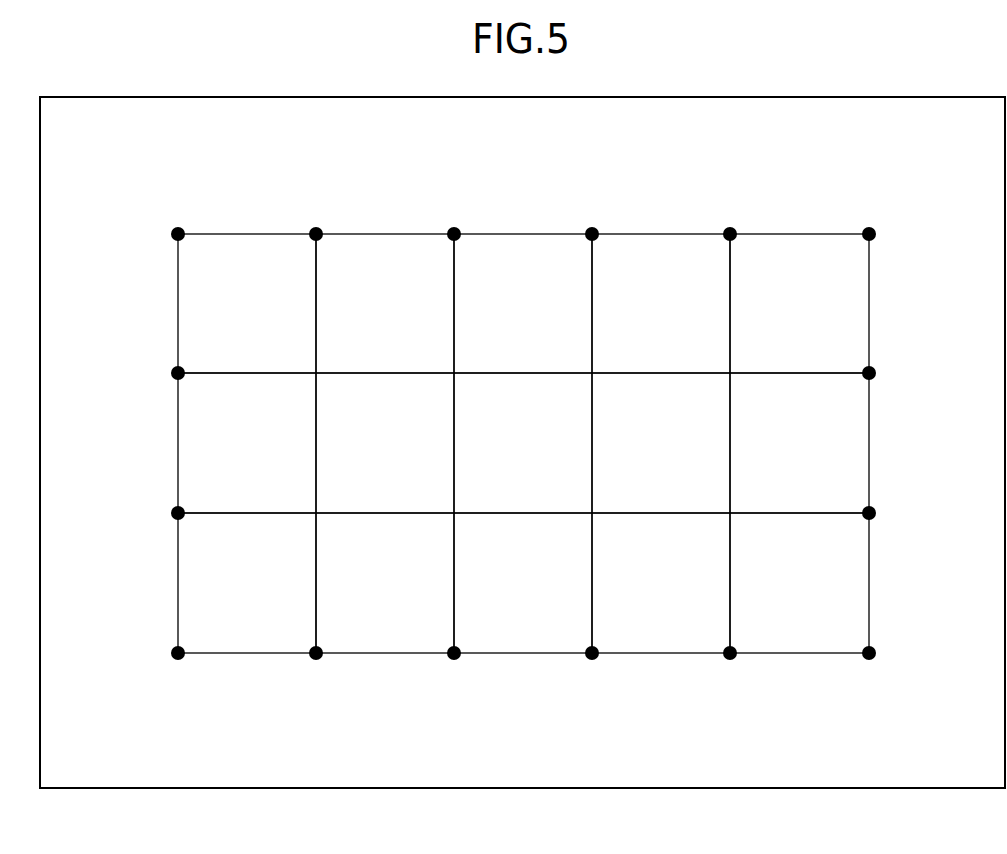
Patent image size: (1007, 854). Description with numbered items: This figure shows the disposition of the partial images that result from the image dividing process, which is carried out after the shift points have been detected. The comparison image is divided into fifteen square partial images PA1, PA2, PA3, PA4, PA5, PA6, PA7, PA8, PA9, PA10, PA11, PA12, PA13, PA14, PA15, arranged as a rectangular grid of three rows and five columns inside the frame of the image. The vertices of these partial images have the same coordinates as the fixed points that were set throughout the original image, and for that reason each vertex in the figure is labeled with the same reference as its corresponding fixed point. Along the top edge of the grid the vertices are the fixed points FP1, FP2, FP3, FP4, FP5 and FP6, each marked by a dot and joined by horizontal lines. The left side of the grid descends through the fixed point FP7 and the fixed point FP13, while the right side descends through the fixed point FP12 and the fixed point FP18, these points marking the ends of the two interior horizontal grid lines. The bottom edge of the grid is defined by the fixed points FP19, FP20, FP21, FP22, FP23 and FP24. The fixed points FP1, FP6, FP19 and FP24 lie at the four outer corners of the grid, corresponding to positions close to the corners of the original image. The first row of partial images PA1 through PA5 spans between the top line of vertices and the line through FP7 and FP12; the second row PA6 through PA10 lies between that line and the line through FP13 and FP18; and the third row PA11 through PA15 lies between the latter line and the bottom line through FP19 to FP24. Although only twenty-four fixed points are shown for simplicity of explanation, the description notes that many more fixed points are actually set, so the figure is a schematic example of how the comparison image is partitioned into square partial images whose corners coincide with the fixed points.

The fixed point FP1 is at (178, 226).
The fixed point FP2 is at (316, 226).
The fixed point FP3 is at (454, 226).
The fixed point FP4 is at (592, 226).
The fixed point FP5 is at (730, 226).
The fixed point FP6 is at (869, 226).
The fixed point FP7 is at (170, 373).
The fixed point FP12 is at (878, 373).
The fixed point FP13 is at (170, 513).
The fixed point FP18 is at (878, 513).
The fixed point FP19 is at (179, 661).
The fixed point FP20 is at (317, 661).
The fixed point FP21 is at (455, 661).
The fixed point FP22 is at (593, 661).
The fixed point FP23 is at (731, 661).
The fixed point FP24 is at (870, 661).
The partial image PA1 is at (225, 316).
The partial image PA2 is at (363, 316).
The partial image PA3 is at (501, 316).
The partial image PA4 is at (639, 316).
The partial image PA5 is at (822, 316).
The partial image PA6 is at (225, 455).
The partial image PA7 is at (363, 455).
The partial image PA8 is at (501, 455).
The partial image PA9 is at (639, 455).
The partial image PA10 is at (770, 455).
The partial image PA11 is at (218, 595).
The partial image PA12 is at (356, 595).
The partial image PA13 is at (494, 595).
The partial image PA14 is at (632, 595).
The partial image PA15 is at (770, 595).